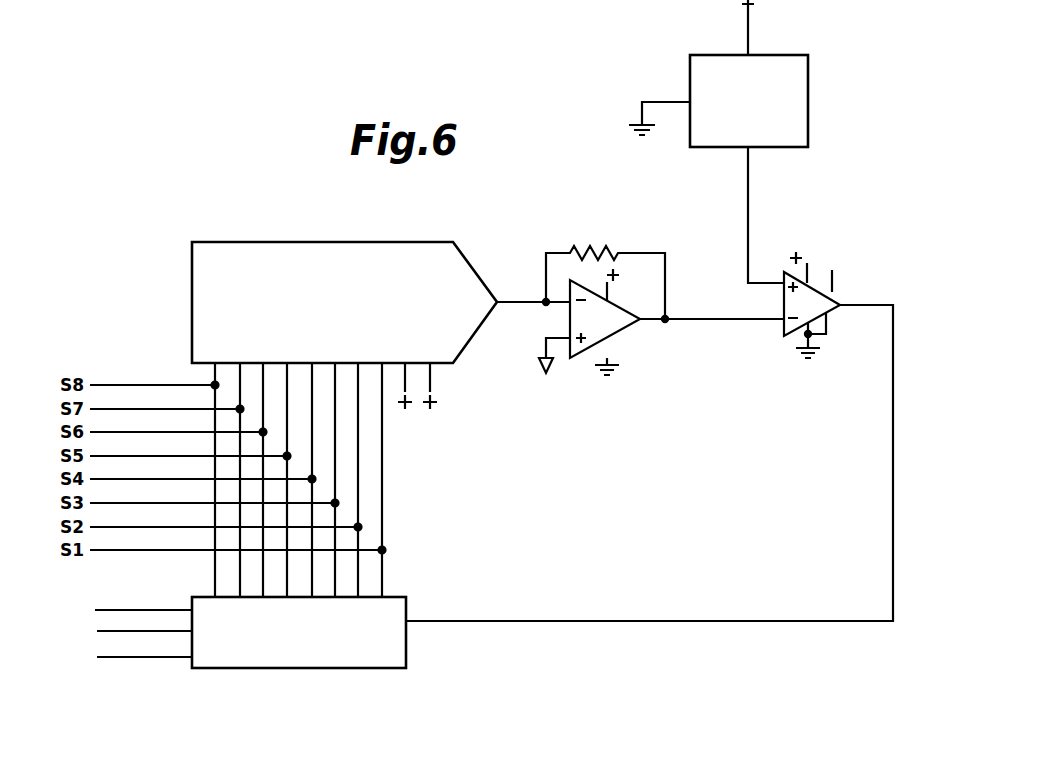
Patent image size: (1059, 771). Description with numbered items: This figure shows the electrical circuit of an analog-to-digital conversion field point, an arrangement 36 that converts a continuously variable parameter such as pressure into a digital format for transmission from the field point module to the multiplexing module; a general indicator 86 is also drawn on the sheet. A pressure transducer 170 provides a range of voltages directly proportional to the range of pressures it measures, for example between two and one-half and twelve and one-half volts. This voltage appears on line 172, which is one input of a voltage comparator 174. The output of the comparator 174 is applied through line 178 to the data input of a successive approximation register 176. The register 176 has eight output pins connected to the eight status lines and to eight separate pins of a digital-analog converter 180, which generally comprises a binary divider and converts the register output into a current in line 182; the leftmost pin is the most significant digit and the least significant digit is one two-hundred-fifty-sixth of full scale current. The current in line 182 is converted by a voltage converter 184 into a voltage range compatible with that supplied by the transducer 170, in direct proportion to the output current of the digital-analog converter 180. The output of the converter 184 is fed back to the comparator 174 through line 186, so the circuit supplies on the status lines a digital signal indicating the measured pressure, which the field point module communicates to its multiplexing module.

The circuit 36 is at (692, 668).
The arrow indicator 86 is at (265, 3).
The pressure transducer 170 is at (808, 128).
The line 172 is at (748, 213).
The voltage comparator 174 is at (783, 337).
The successive approximation register 176 is at (231, 668).
The line 178 is at (453, 621).
The digital-analog converter 180 is at (360, 242).
The line 182 is at (520, 302).
The voltage converter 184 is at (628, 333).
The line 186 is at (710, 319).